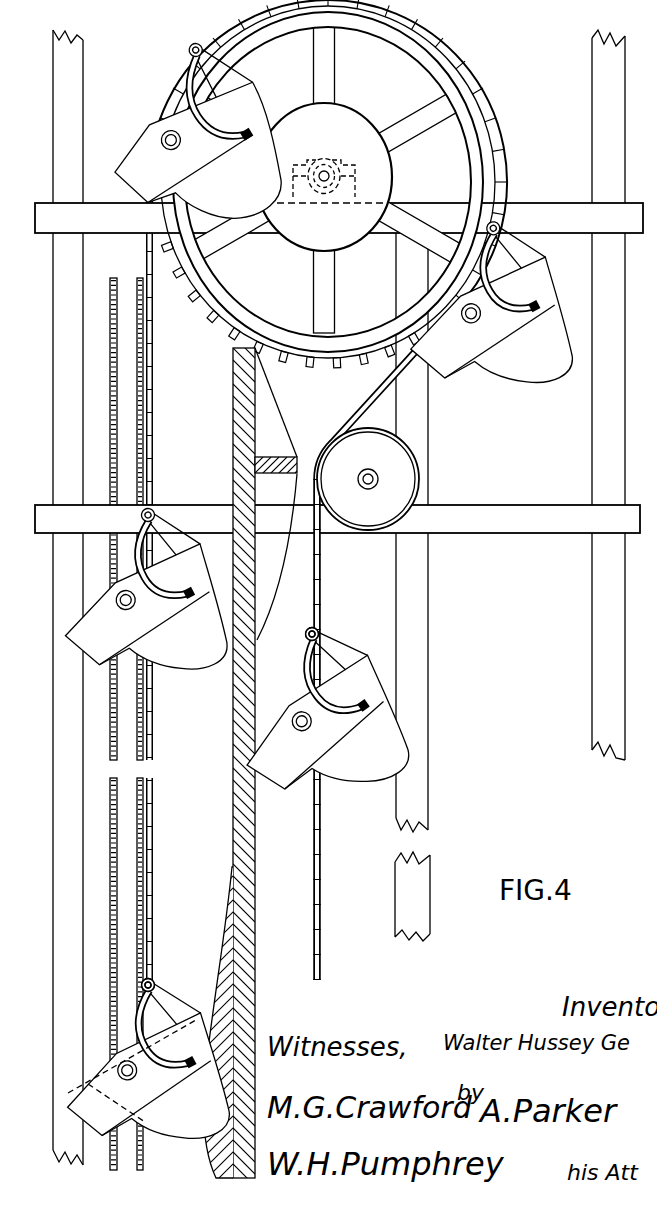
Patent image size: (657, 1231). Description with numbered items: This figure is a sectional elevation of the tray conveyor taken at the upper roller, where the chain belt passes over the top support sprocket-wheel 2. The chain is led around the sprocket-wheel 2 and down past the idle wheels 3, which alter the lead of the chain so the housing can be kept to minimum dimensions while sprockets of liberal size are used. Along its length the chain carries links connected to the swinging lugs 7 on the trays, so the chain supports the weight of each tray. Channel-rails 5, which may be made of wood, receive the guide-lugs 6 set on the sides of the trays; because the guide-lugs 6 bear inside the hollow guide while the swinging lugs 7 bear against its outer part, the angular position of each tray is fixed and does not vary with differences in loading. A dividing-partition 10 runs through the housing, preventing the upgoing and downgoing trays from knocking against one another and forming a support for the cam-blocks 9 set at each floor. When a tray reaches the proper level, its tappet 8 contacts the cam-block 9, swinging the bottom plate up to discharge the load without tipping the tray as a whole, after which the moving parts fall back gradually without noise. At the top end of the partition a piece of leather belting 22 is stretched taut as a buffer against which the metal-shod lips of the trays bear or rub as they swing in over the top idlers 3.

The sprocket-wheels 2 is at (328, 187).
The idle wheels 3 is at (368, 479).
The channel-rails 5 is at (125, 718).
The guide-lugs 6 is at (122, 606).
The swinging lugs 7 is at (320, 628).
The tappet 8 is at (491, 323).
The cam-block 9 is at (230, 930).
The dividing-partition 10 is at (250, 664).
The leather belting 22 is at (273, 552).